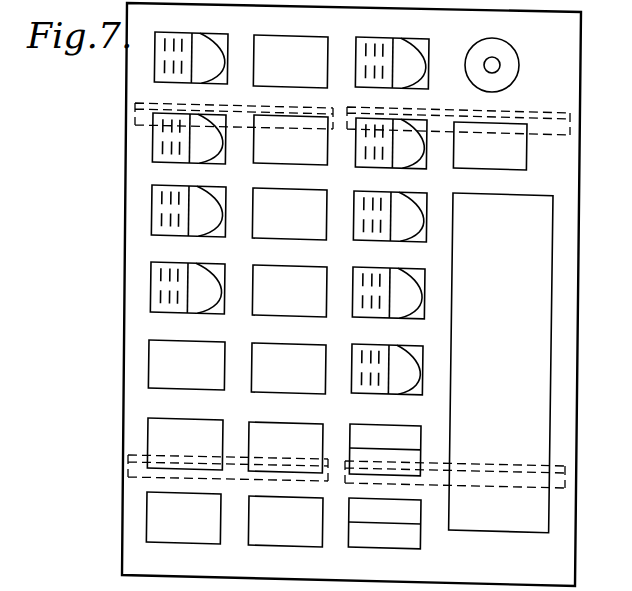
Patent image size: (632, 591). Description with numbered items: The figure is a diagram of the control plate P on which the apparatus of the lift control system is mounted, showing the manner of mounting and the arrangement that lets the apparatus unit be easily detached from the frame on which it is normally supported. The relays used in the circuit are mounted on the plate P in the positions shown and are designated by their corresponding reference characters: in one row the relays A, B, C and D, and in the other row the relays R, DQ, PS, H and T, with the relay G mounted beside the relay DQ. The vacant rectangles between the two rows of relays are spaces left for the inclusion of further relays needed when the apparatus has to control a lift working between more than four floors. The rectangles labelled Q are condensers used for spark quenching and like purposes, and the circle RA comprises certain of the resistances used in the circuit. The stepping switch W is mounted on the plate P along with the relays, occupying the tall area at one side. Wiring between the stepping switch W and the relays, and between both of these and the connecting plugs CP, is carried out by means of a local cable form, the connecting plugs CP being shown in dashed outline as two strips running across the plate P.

The plate P is at (581, 77).
The relay A is at (191, 58).
The relay B is at (189, 138).
The relay C is at (188, 211).
The relay D is at (187, 288).
The relay R is at (392, 63).
The resistances RA is at (503, 80).
The relay DQ is at (391, 143).
The relay G is at (490, 146).
The relay PS is at (390, 216).
The relay H is at (388, 293).
The relay T is at (387, 369).
The stepping switch W is at (501, 363).
The condensers Q is at (388, 439).
The connecting plugs CP is at (558, 128).